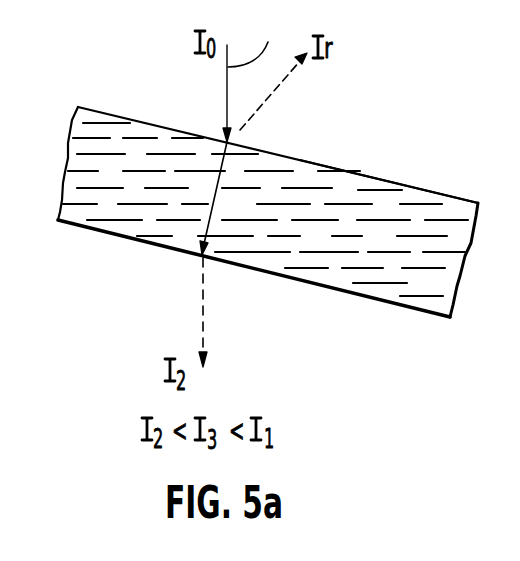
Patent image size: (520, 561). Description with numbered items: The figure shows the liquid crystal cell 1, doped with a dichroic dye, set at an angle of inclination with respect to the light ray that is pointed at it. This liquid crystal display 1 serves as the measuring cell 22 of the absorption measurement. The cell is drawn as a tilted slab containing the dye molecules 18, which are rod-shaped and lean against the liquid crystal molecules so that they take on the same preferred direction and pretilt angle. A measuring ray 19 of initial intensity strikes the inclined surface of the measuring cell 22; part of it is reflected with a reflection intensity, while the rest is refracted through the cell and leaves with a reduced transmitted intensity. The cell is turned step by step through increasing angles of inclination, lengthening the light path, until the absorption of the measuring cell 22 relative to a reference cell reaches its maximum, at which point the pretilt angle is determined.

The liquid crystal cell 1 is at (383, 179).
The measuring cell 22 is at (440, 193).
The dye molecules 18 is at (437, 268).
The measuring ray 19 is at (253, 74).